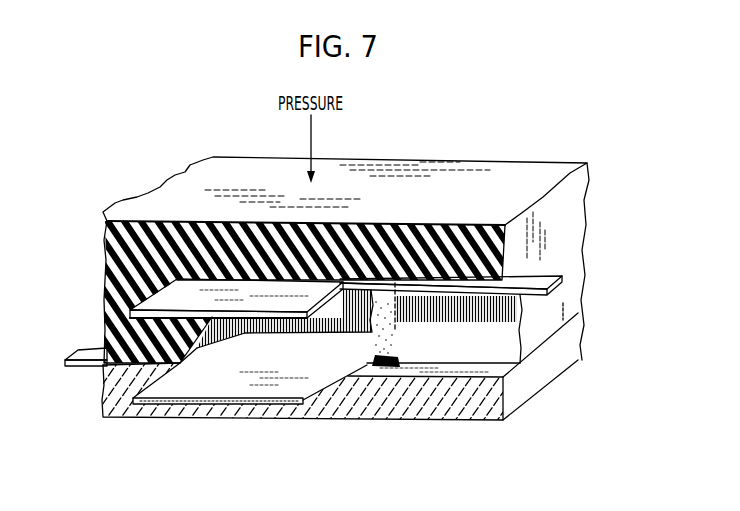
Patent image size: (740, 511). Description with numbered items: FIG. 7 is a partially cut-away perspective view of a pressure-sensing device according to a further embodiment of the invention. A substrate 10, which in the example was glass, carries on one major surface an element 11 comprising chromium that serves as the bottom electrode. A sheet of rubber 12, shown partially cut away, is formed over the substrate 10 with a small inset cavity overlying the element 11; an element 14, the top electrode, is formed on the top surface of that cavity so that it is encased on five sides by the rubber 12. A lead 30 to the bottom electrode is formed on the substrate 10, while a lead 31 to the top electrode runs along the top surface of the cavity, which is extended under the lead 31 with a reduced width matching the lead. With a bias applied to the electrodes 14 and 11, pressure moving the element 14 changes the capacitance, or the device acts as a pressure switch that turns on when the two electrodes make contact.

The substrate 10 is at (518, 393).
The element 11 is at (235, 383).
The sheet of rubber 12 is at (565, 219).
The element 14 is at (165, 303).
The lead 30 is at (90, 357).
The lead 31 is at (555, 278).